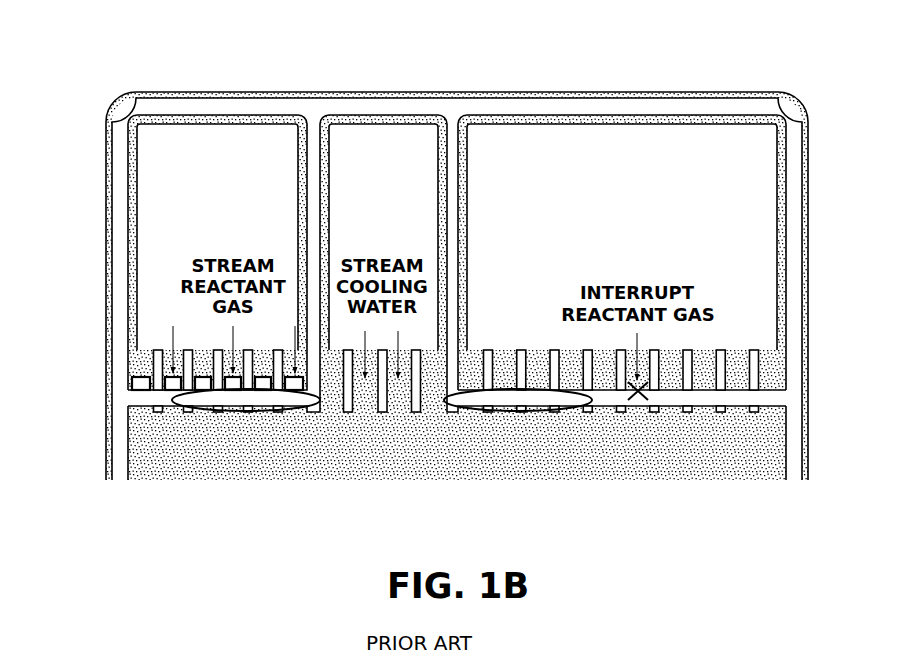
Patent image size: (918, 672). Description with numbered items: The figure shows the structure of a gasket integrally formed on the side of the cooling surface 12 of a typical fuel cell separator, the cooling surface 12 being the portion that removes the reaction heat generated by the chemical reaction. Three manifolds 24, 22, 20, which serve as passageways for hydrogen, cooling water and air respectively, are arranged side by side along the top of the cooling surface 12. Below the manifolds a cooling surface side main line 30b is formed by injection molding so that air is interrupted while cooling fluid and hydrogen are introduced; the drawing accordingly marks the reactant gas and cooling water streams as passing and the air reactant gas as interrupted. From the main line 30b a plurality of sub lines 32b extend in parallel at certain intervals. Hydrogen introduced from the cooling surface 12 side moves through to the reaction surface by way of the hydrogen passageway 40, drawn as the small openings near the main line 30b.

The cooling surface 12 is at (148, 442).
The manifold 20 is at (603, 142).
The manifold 22 is at (383, 142).
The manifold 24 is at (215, 142).
The cooling surface side main line 30b is at (260, 413).
The sub lines 32b is at (157, 367).
The hydrogen passageway 40 is at (135, 371).